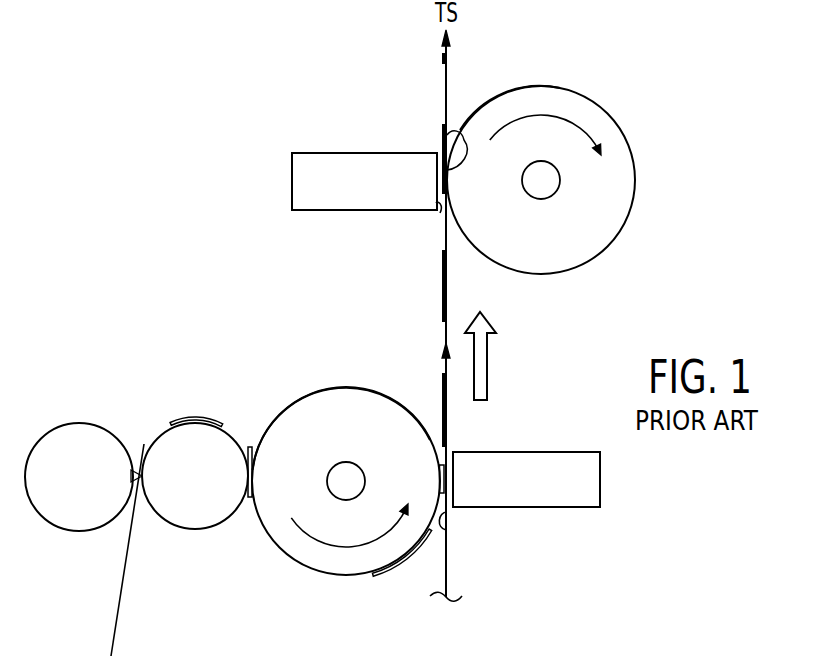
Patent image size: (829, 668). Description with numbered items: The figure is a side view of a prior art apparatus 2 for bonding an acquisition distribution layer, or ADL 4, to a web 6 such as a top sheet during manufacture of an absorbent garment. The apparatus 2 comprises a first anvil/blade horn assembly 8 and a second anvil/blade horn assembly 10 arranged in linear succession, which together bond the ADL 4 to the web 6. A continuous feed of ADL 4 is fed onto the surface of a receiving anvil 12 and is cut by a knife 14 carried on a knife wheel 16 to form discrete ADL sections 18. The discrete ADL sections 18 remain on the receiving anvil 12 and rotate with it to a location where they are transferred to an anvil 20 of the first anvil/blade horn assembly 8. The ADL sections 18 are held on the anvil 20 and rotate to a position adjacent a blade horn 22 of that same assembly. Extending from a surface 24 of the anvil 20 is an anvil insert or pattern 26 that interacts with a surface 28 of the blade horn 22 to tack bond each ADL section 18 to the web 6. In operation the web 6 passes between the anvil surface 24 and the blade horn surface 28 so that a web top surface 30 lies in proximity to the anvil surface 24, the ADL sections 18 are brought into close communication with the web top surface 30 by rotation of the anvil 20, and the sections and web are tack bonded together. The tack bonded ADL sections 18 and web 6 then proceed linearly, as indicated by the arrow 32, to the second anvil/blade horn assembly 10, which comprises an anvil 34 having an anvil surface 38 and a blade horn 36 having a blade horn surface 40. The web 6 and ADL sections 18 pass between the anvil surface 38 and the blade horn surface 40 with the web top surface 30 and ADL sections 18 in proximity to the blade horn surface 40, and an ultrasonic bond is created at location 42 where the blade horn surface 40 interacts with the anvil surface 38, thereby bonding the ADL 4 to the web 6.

The apparatus 2 is at (585, 45).
The ADL 4 is at (120, 587).
The web 6 is at (448, 563).
The first anvil/blade horn assembly 8 is at (550, 530).
The second anvil/blade horn assembly 10 is at (610, 100).
The receiving anvil 12 is at (203, 497).
The knife 14 is at (133, 470).
The knife wheel 16 is at (60, 424).
The discrete ADL sections 18 is at (250, 452).
The anvil 20 is at (358, 442).
The blade horn 22 is at (538, 492).
The anvil surface 24 is at (340, 387).
The anvil insert or pattern 26 is at (440, 478).
The blade horn surface 28 is at (452, 463).
The web top surface 30 is at (446, 530).
The linear direction 32 is at (480, 358).
The anvil 34 is at (555, 247).
The blade horn 36 is at (378, 196).
The anvil surface 38 is at (507, 93).
The blade horn surface 40 is at (440, 213).
The location 42 is at (447, 135).